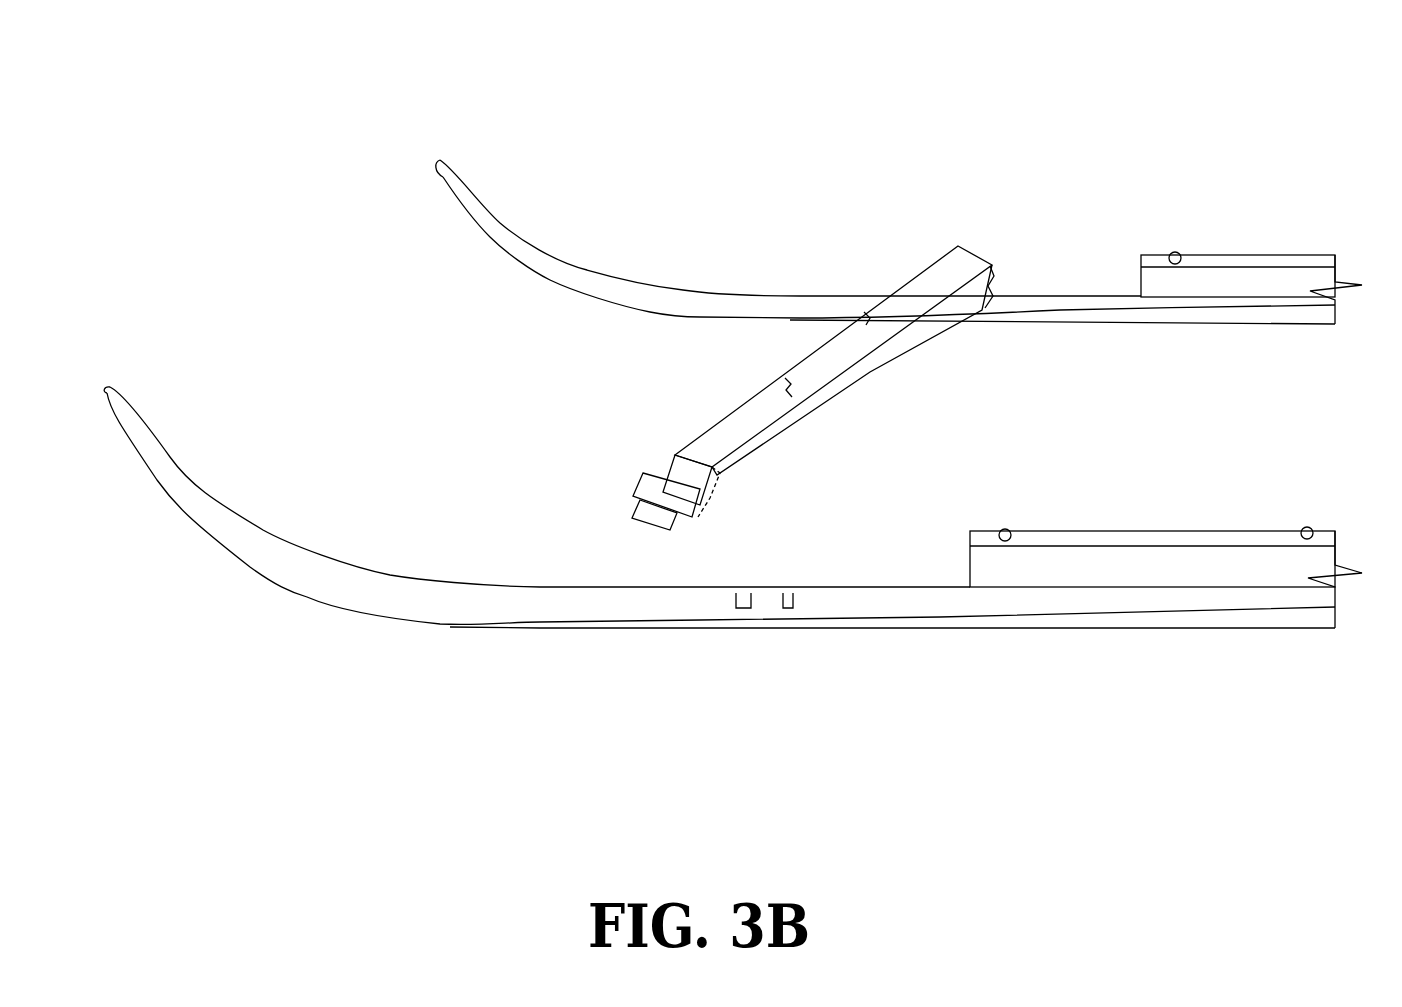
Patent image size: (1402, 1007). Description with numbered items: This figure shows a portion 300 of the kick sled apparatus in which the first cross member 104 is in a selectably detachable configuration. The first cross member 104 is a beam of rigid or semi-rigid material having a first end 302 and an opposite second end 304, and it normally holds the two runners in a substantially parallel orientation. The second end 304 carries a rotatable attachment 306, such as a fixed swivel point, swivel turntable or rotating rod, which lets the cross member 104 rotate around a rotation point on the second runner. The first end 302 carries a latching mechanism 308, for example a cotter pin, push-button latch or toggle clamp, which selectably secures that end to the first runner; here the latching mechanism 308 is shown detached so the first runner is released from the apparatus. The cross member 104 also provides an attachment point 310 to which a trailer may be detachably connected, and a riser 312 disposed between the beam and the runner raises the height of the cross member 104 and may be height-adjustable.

The portion of the apparatus 300 is at (236, 110).
The first cross member 104 is at (830, 387).
The first end 302 is at (669, 513).
The second end 304 is at (842, 326).
The rotatable attachment 306 is at (967, 303).
The latching mechanism 308 is at (620, 458).
The attachment point 310 is at (828, 363).
The riser 312 is at (690, 477).